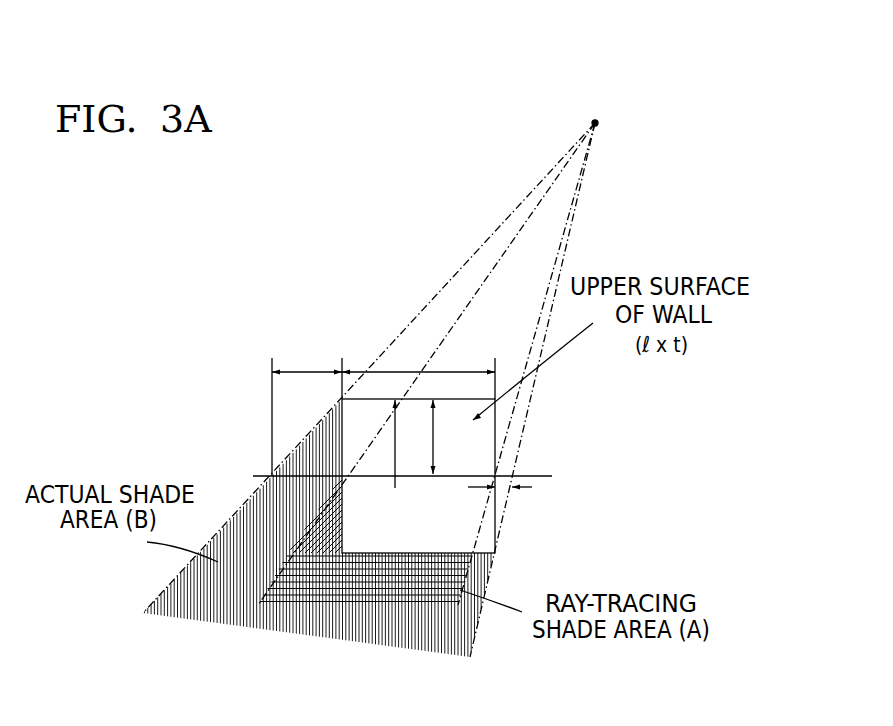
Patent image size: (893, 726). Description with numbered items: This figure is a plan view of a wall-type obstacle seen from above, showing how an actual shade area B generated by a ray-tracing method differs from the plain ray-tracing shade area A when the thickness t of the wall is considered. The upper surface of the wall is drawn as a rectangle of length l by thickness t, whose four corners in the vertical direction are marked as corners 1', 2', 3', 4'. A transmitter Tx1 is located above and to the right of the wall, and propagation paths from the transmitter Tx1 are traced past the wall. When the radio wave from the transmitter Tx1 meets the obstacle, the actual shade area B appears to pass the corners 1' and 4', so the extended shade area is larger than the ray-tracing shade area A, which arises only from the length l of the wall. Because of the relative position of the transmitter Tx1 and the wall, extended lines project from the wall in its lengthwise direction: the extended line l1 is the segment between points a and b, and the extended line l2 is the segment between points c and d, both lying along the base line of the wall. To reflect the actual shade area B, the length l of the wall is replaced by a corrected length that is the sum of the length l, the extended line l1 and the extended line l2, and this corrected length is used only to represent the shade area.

The corner 1' is at (408, 425).
The corner 2' is at (510, 360).
The corner 3' is at (304, 615).
The corner 4' is at (525, 560).
The point a is at (272, 475).
The point b is at (345, 478).
The point c is at (526, 364).
The point d is at (513, 474).
The transmitter Tx1 is at (598, 107).
The extended line l1 is at (307, 362).
The length of the wall l is at (418, 363).
The extended line l2 is at (510, 491).
The thickness of the wall t is at (401, 444).